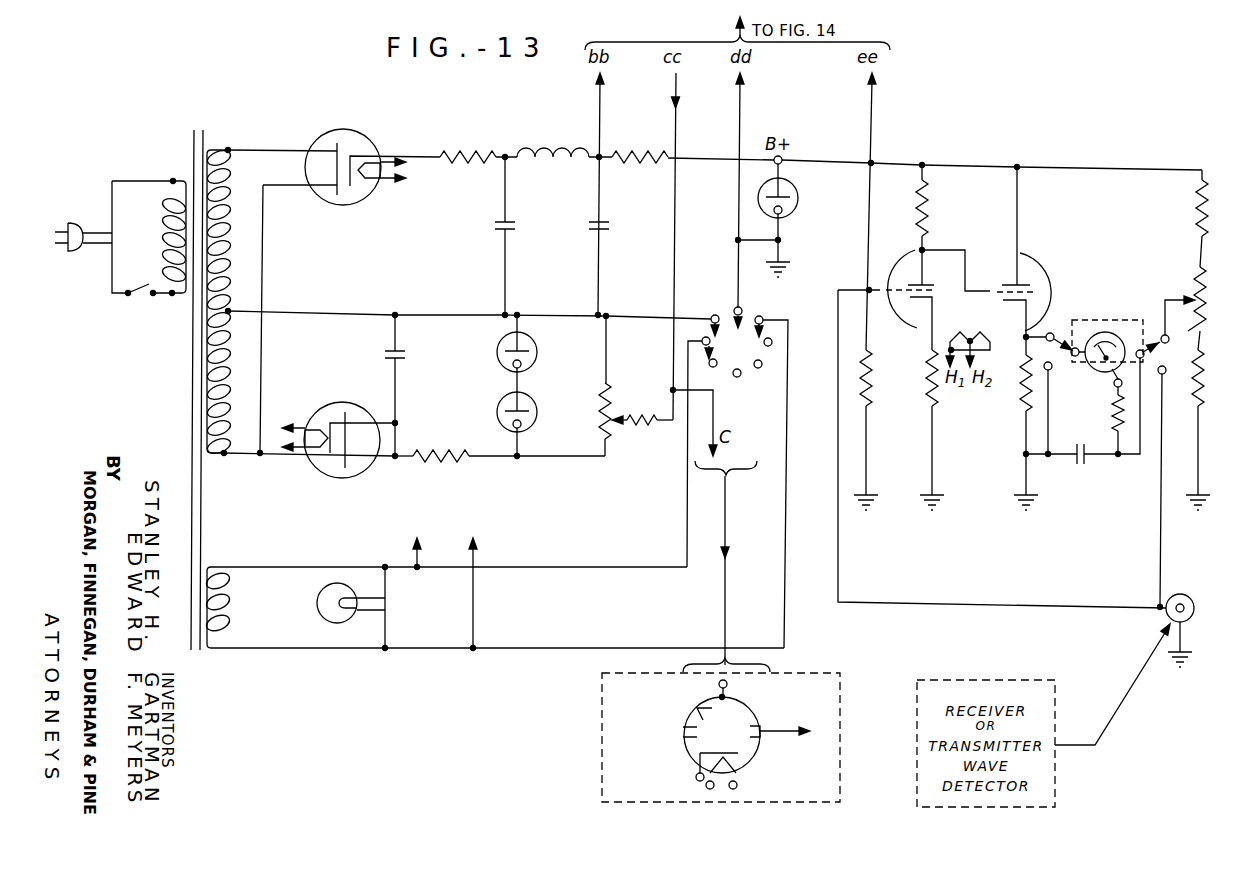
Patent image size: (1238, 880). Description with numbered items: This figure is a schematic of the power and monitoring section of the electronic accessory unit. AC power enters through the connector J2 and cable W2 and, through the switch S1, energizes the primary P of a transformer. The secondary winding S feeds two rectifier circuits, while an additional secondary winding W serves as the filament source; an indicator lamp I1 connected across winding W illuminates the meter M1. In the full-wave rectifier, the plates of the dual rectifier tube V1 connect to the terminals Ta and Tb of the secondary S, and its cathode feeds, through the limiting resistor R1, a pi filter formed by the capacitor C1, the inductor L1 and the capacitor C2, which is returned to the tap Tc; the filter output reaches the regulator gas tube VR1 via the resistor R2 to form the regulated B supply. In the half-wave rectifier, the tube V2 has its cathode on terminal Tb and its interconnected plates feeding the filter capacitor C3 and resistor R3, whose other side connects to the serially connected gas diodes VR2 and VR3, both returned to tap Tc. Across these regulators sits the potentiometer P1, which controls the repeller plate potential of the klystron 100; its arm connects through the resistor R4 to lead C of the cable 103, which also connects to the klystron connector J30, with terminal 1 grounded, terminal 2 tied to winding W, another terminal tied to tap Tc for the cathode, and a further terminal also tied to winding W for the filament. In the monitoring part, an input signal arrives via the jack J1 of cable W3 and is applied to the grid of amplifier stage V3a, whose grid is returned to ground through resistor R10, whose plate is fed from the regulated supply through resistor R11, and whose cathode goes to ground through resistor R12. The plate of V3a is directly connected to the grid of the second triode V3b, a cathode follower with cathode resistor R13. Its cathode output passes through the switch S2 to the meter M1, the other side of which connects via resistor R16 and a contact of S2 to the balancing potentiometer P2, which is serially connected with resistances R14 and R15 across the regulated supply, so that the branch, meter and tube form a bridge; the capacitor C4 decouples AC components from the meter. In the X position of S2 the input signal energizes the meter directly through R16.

The terminal 1 is at (406, 657).
The terminal 2 is at (1108, 161).
The klystron 100 is at (683, 750).
The cable 103 is at (729, 591).
The jack J1 is at (1192, 598).
The connector J2 is at (72, 228).
The klystron connector J30 is at (740, 340).
The secondary winding W is at (229, 604).
The cable W2 is at (100, 244).
The cable W3 is at (1117, 712).
The primary P is at (165, 206).
The secondary winding S is at (228, 241).
The switch S1 is at (140, 285).
The switch S2 is at (1088, 322).
The terminal Ta is at (231, 150).
The terminal Tb is at (227, 453).
The tap Tc is at (229, 313).
The dual rectifier tube V1 is at (318, 139).
The rectifier tube V2 is at (322, 472).
The amplifier stage V3a is at (910, 252).
The second triode V3b is at (1050, 262).
The gas tube VR1 is at (800, 200).
The gas diode VR2 is at (539, 352).
The gas diode VR3 is at (539, 407).
The limiting resistor R1 is at (472, 150).
The resistor R2 is at (637, 152).
The resistor R3 is at (437, 450).
The resistor R4 is at (645, 430).
The resistor R10 is at (869, 404).
The resistor R11 is at (932, 190).
The resistor R12 is at (928, 378).
The resistor R13 is at (1020, 410).
The resistance R14 is at (1196, 215).
The resistance R15 is at (1202, 412).
The resistor R16 is at (1110, 418).
The potentiometer P1 is at (612, 395).
The balancing potentiometer P2 is at (1212, 290).
The filter inductor L1 is at (555, 152).
The filter capacitor C1 is at (516, 228).
The filter capacitor C2 is at (610, 229).
The filter capacitor C3 is at (407, 356).
The capacitor C4 is at (1088, 464).
The meter M1 is at (1098, 370).
The indicator lamp I1 is at (330, 612).